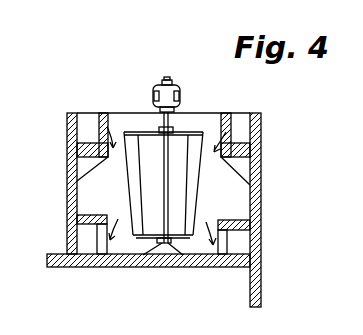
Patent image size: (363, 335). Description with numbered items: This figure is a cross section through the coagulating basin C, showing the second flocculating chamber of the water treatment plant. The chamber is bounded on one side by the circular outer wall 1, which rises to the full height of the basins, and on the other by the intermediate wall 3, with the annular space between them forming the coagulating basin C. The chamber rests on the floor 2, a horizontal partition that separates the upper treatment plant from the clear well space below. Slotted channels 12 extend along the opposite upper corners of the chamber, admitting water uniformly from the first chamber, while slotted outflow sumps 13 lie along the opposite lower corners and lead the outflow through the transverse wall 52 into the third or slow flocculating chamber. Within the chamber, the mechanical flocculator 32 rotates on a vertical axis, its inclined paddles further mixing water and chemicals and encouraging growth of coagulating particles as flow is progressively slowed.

The outer wall 1 is at (262, 183).
The floor 2 is at (100, 268).
The intermediate wall 3 is at (67, 163).
The channels 12 is at (86, 123).
The outflow sumps 13 is at (234, 247).
The mechanical flocculator 32 is at (194, 190).
The transverse wall 52 is at (196, 123).
The coagulating basin C is at (135, 107).